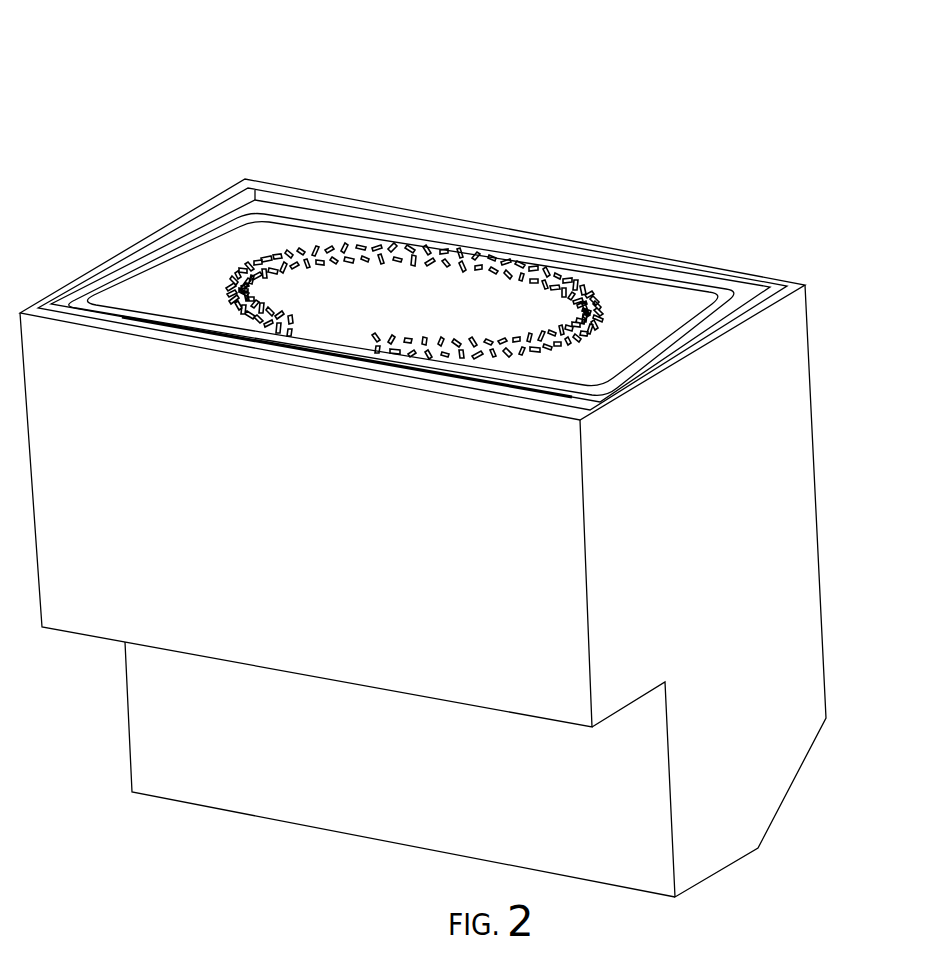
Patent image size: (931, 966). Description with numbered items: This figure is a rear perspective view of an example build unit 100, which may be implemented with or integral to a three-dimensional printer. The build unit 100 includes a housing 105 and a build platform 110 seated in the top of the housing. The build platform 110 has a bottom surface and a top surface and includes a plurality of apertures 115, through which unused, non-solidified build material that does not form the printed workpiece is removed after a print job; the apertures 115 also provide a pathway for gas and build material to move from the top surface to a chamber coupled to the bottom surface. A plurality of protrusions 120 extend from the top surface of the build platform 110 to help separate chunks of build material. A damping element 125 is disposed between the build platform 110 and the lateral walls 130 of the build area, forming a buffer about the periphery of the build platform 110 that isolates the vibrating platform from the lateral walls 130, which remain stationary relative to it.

The build unit 100 is at (675, 65).
The housing 105 is at (785, 410).
The build platform 110 is at (147, 272).
The plurality of apertures 115 is at (480, 270).
The plurality of protrusions 120 is at (565, 288).
The damping element 125 is at (452, 252).
The lateral walls 130 is at (292, 202).